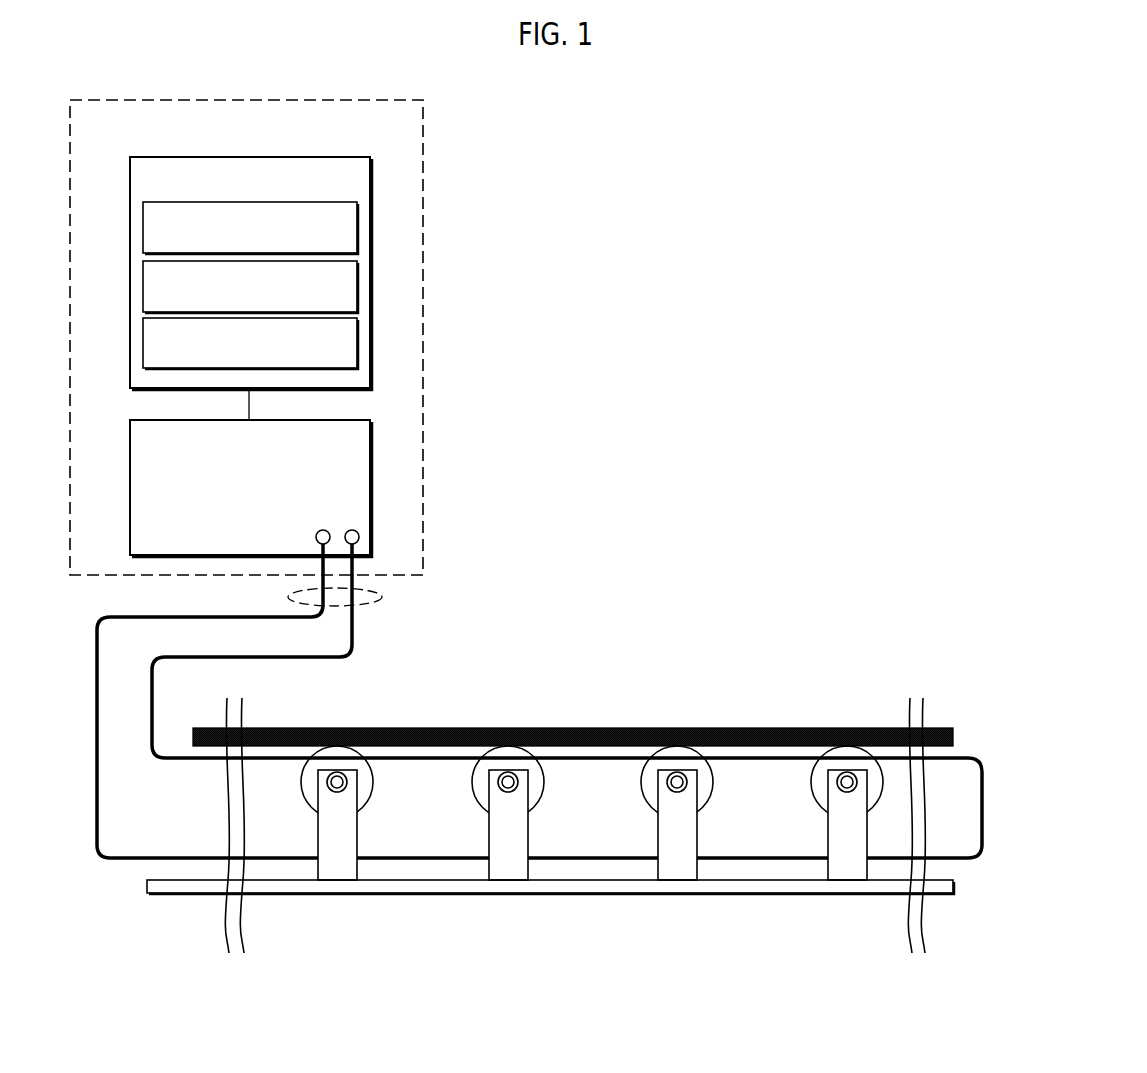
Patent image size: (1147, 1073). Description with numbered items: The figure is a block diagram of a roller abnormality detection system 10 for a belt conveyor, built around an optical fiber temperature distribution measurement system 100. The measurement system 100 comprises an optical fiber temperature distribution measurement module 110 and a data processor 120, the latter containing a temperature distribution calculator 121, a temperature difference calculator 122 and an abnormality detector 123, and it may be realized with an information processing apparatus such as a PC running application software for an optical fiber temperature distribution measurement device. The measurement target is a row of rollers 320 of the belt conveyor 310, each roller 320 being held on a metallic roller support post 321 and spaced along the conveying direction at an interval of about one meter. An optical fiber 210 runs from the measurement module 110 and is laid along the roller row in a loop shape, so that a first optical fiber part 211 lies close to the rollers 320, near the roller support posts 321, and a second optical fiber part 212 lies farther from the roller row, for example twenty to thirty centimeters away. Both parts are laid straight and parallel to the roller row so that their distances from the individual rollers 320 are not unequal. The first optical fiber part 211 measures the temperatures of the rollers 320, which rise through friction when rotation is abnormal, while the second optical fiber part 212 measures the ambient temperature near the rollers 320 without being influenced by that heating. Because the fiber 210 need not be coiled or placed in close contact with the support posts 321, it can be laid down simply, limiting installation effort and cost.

The roller abnormality detection system 10 is at (578, 558).
The optical fiber temperature distribution measurement system 100 is at (423, 122).
The optical fiber temperature distribution measurement module 110 is at (370, 462).
The data processor 120 is at (370, 183).
The temperature distribution calculator 121 is at (357, 228).
The temperature difference calculator 122 is at (357, 287).
The abnormality detector 123 is at (357, 341).
The optical fiber 210 is at (382, 597).
The first optical fiber part 211 is at (584, 757).
The second optical fiber part 212 is at (596, 861).
The belt conveyor 310 is at (437, 736).
The roller 320 is at (509, 752).
The roller support post 321 is at (498, 818).